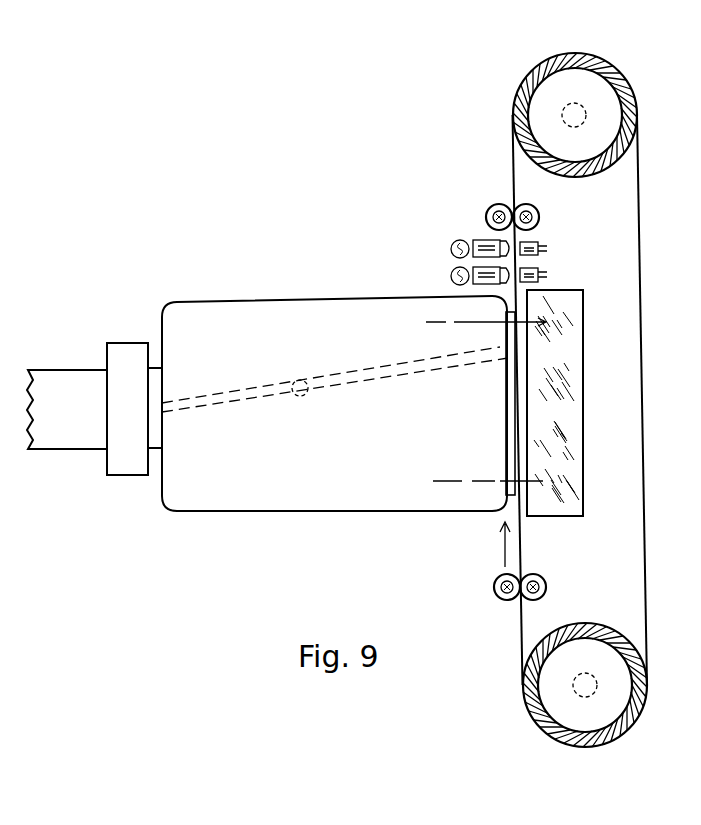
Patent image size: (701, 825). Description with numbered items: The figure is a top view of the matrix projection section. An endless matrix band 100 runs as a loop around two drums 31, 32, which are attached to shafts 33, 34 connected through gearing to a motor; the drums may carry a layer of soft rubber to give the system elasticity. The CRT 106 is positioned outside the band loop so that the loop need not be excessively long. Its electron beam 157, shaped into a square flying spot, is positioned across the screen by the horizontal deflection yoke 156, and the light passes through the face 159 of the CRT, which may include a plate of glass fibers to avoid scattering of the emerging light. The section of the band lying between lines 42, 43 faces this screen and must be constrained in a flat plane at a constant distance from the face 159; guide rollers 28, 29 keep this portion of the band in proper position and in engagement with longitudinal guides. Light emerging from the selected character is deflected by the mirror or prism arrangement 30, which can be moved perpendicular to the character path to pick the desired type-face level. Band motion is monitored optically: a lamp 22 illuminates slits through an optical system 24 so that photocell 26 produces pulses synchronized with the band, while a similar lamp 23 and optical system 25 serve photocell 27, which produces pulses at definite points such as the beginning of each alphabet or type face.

The lamp 22 is at (451, 250).
The lamp 23 is at (451, 276).
The optical system 24 is at (478, 240).
The optical system 25 is at (489, 284).
The photocell 26 is at (539, 243).
The photocell 27 is at (540, 272).
The guide roller 28 is at (507, 206).
The guide roller 29 is at (532, 599).
The prism 30 is at (557, 511).
The drum 31 is at (544, 61).
The drum 32 is at (580, 626).
The shaft 33 is at (571, 126).
The shaft 34 is at (580, 697).
The line 42 is at (474, 318).
The line 43 is at (476, 480).
The matrix band 100 is at (640, 310).
The CRT 106 is at (241, 512).
The horizontal deflection yoke 156 is at (120, 470).
The electron beam 157 is at (304, 397).
The face 159 is at (507, 413).